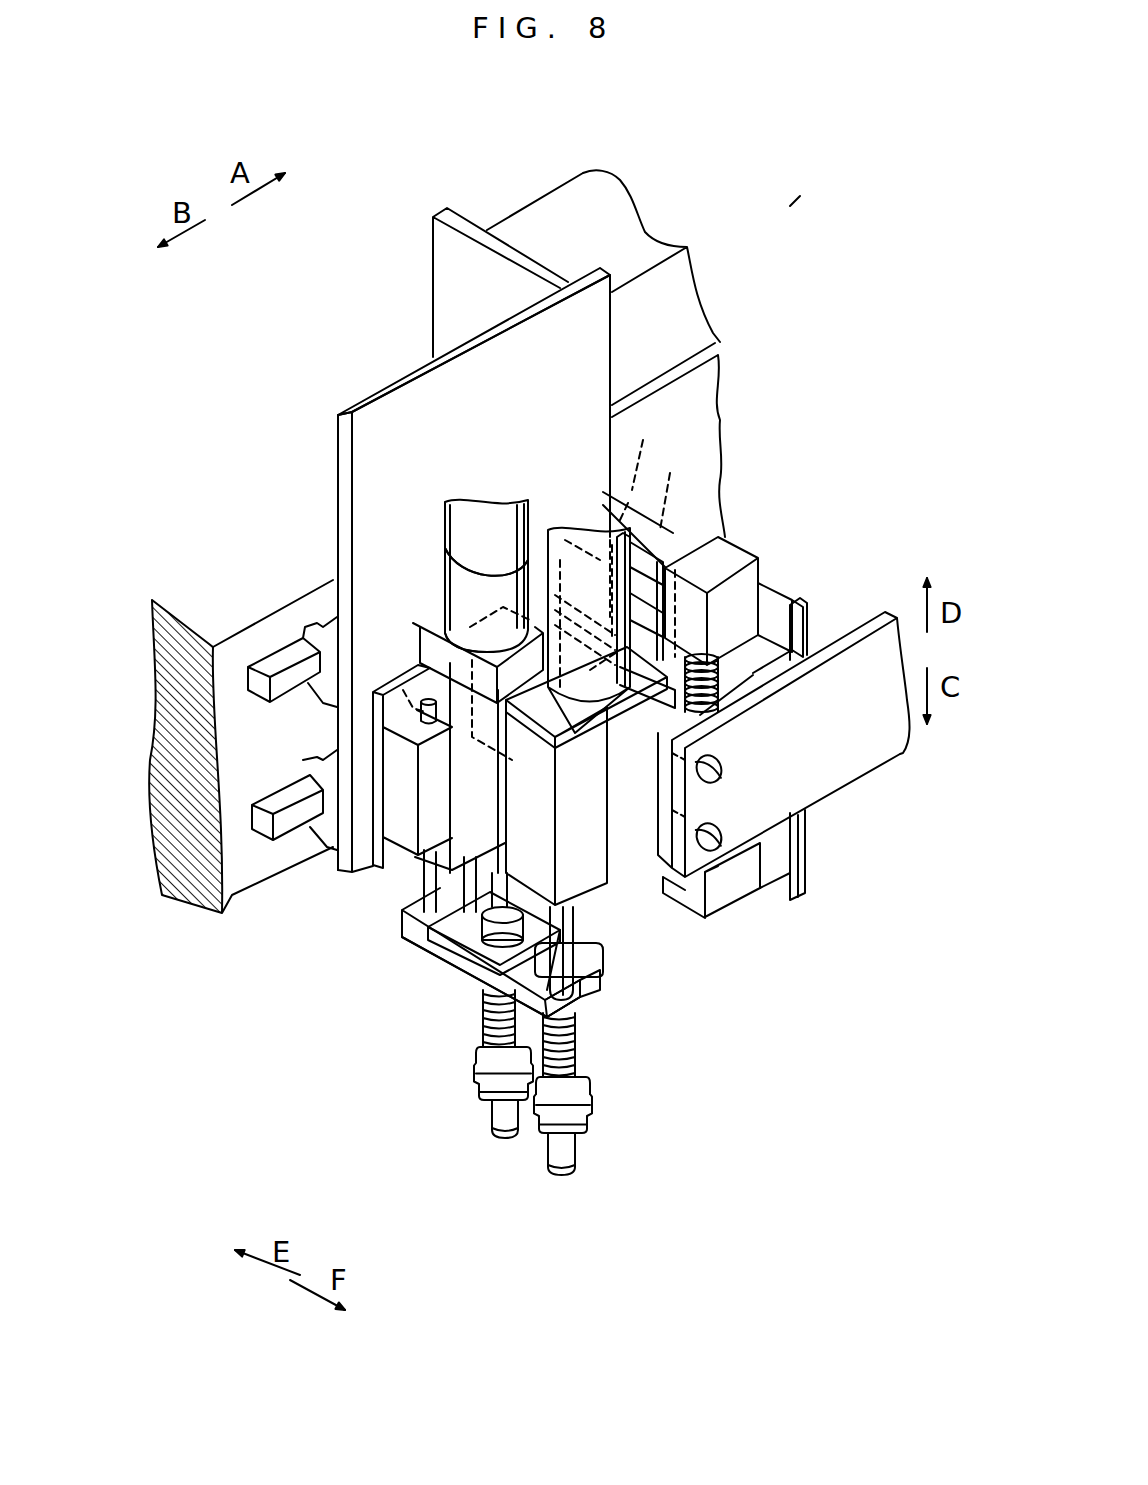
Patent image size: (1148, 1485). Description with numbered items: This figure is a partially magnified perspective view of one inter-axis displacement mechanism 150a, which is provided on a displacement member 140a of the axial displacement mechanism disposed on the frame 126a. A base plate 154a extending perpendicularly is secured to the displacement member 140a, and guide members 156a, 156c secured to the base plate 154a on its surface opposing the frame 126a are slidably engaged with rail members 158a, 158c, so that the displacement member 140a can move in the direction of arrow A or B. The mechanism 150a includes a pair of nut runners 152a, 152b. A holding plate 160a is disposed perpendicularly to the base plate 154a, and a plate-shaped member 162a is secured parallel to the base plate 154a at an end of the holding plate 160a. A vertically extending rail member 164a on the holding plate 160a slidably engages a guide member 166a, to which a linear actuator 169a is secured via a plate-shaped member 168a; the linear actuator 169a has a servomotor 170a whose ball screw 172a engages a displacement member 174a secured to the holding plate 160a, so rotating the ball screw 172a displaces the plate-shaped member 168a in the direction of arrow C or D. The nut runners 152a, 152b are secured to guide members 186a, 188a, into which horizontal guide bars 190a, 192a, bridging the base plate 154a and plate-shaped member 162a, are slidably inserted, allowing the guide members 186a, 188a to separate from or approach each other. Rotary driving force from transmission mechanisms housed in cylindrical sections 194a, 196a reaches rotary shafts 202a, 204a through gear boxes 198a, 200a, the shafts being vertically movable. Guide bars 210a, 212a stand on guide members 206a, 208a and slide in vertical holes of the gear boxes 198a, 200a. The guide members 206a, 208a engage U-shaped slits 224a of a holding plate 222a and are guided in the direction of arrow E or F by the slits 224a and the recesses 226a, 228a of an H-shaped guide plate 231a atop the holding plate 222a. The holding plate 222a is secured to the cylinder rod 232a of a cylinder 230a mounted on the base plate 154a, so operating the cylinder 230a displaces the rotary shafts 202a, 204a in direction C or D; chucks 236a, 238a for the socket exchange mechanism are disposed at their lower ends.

The displacement member 140a is at (547, 200).
The inter-axis displacement mechanism 150a is at (790, 206).
The base plate 154a is at (360, 470).
The frame 126a is at (312, 508).
The rail member 158a is at (267, 660).
The rail member 158c is at (224, 908).
The guide member 156a is at (152, 600).
The guide member 156c is at (310, 778).
The nut runner 152a is at (440, 484).
The nut runner 152b is at (548, 520).
The cylindrical section 194a is at (445, 516).
The cylindrical section 196a is at (463, 530).
The gear box 198a is at (443, 636).
The guide member 186a is at (430, 662).
The cylinder 230a is at (393, 797).
The cylinder rod 232a is at (425, 852).
The holding plate 222a is at (402, 920).
The guide bar 210a is at (467, 920).
The guide member 206a is at (483, 953).
The rotary shaft 202a is at (460, 915).
The rotary shaft 204a is at (600, 980).
The guide bar 212a is at (592, 1036).
The guide member 208a is at (595, 1082).
The slit 224a is at (480, 990).
The recess 226a is at (516, 1130).
The recess 228a is at (600, 1110).
The guide plate 231a is at (598, 1125).
The chuck 236a is at (596, 1152).
The chuck 238a is at (600, 1136).
The plate-shaped member 168a is at (653, 486).
The guide member 166a is at (686, 548).
The rail member 164a is at (655, 563).
The servomotor 170a is at (742, 590).
The linear actuator 169a is at (768, 604).
The holding plate 160a is at (802, 630).
The ball screw 172a is at (737, 673).
The plate-shaped member 162a is at (860, 767).
The guide bar 190a is at (718, 757).
The guide bar 192a is at (722, 840).
The displacement member 174a is at (747, 880).
The guide member 188a is at (707, 917).
The gear box 200a is at (590, 783).